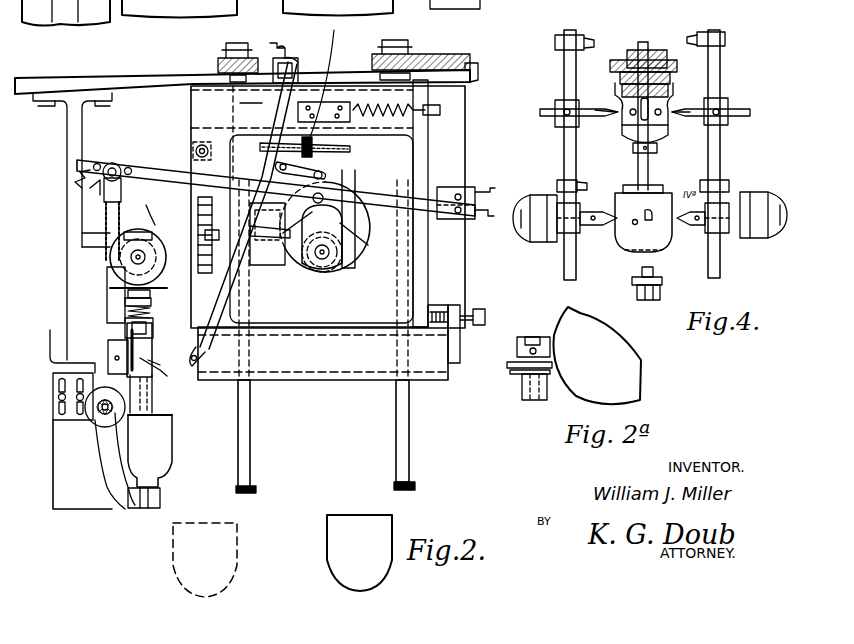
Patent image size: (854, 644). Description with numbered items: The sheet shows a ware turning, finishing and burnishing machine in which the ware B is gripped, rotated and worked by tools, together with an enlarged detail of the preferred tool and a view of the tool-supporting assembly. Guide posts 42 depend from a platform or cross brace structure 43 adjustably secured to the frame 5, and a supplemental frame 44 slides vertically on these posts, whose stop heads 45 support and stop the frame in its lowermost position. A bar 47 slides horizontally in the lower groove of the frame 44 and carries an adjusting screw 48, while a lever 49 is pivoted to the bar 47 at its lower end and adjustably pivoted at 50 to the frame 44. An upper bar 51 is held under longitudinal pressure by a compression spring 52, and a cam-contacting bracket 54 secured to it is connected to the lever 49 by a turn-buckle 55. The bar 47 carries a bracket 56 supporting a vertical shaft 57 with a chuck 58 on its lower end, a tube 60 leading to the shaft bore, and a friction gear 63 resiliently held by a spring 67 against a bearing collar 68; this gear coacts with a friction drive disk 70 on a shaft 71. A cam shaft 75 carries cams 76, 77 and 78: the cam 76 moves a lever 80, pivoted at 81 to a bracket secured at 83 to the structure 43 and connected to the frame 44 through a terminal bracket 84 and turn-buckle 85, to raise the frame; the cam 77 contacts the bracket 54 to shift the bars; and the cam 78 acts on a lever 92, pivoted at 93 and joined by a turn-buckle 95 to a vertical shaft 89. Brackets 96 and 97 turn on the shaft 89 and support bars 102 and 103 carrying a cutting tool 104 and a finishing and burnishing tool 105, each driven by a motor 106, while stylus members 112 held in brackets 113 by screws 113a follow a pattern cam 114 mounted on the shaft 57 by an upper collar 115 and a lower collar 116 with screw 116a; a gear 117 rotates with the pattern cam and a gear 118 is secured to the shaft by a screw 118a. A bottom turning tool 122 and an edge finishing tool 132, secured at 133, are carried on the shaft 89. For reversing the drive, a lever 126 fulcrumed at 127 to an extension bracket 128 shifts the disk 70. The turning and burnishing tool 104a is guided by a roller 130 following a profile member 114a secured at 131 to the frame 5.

In FIG. 2, the frame 5 is at (67, 338).
In FIG. 2, the guide posts 42 is at (250, 442).
In FIG. 2, the platform or cross brace structure 43 is at (348, 62).
In FIG. 2, the supplemental frame 44 is at (333, 380).
In FIG. 2, the stop heads 45 is at (257, 489).
In FIG. 2, the bar 47 is at (454, 363).
In FIG. 2, the adjusting screw 48 is at (480, 312).
In FIG. 2, the lever 49 is at (249, 108).
In FIG. 2, the sliding block adjustment pivot 50 is at (298, 63).
In FIG. 2, the bar 51 is at (191, 110).
In FIG. 2, the compression spring 52 is at (372, 116).
In FIG. 2, the cam-contacting member or bracket 54 is at (358, 262).
In FIG. 2, the turn-buckle 55 is at (324, 80).
In FIG. 2, the supporting member or bracket 56 is at (108, 358).
In FIG. 2, the shaft 57 is at (152, 398).
In FIG. 4, the shaft 57 is at (644, 42).
In FIG. 2, the head or chuck 58 is at (173, 414).
In FIG. 4, the head or chuck 58 is at (628, 186).
In FIG. 2, the flexible member or tube 60 is at (163, 374).
In FIG. 2, the friction gear or disk 63 is at (167, 289).
In FIG. 2, the spring 67 is at (150, 311).
In FIG. 2, the bearing collar 68 is at (112, 312).
In FIG. 2, the friction gear or drive disk 70 is at (135, 232).
In FIG. 2, the shaft 71 is at (146, 260).
In FIG. 2, the cam shaft 75 is at (326, 257).
In FIG. 2, the cam 76 is at (360, 226).
In FIG. 2, the cam 77 is at (325, 239).
In FIG. 2, the cam 78 is at (357, 246).
In FIG. 2, the lever 80 is at (337, 166).
In FIG. 2, the sliding block adjustment pivot 81 is at (458, 190).
In FIG. 2, the bracket securing point 83 is at (483, 71).
In FIG. 2, the terminal bracket 84 is at (197, 168).
In FIG. 2, the turn-buckle 85 is at (196, 228).
In FIG. 2, the supporting member or bar or shaft 89 is at (127, 325).
In FIG. 4, the supporting member or bar or shaft 89 is at (642, 272).
In FIG. 2, the lever 92 is at (150, 168).
In FIG. 2, the sliding block adjustment pivot 93 is at (458, 244).
In FIG. 2, the turn-buckle 95 is at (112, 235).
In FIG. 4, the bracket 96 is at (722, 42).
In FIG. 4, the bracket 97 is at (578, 44).
In FIG. 4, the tool-supporting bar 102 is at (564, 153).
In FIG. 4, the tool-supporting bar 103 is at (720, 140).
In FIG. 4, the cutting tool 104 is at (603, 230).
In FIG. 2A, the turning and finishing and burnishing tool 104a is at (520, 340).
In FIG. 4, the finishing and burnishing tool 105 is at (686, 230).
In FIG. 2, the motor 106 is at (92, 420).
In FIG. 4, the motor 106 is at (535, 242).
In FIG. 4, the pattern-cam contour-following stylus member 112 is at (600, 118).
In FIG. 4, the bracket 113 is at (563, 103).
In FIG. 4, the screw 113a is at (748, 105).
In FIG. 4, the pattern cam 114 is at (615, 100).
In FIG. 2, the pattern or profile member 114a is at (80, 509).
In FIG. 2A, the pattern or profile member 114a is at (507, 366).
In FIG. 4, the upper collar 115 is at (668, 88).
In FIG. 4, the lower collar 116 is at (657, 148).
In FIG. 4, the screw 116a is at (650, 158).
In FIG. 4, the gear 117 is at (670, 76).
In FIG. 4, the gear 118 is at (668, 63).
In FIG. 4, the screw 118a is at (657, 52).
In FIG. 2, the bottom turning and finishing tool 122 is at (162, 490).
In FIG. 4, the bottom turning and finishing tool 122 is at (636, 290).
In FIG. 2, the lever 126 is at (159, 206).
In FIG. 2, the fulcrum 127 is at (269, 221).
In FIG. 2, the extension bracket 128 is at (267, 245).
In FIG. 2, the roller 130 is at (80, 190).
In FIG. 2A, the roller 130 is at (522, 382).
In FIG. 2, the securing point 131 is at (53, 406).
In FIG. 2, the edge finishing tool 132 is at (127, 336).
In FIG. 2, the securing point 133 is at (153, 330).
In FIG. 2, the bottle B is at (172, 450).
In FIG. 2A, the bottle B is at (632, 388).
In FIG. 4, the bottle B is at (665, 255).